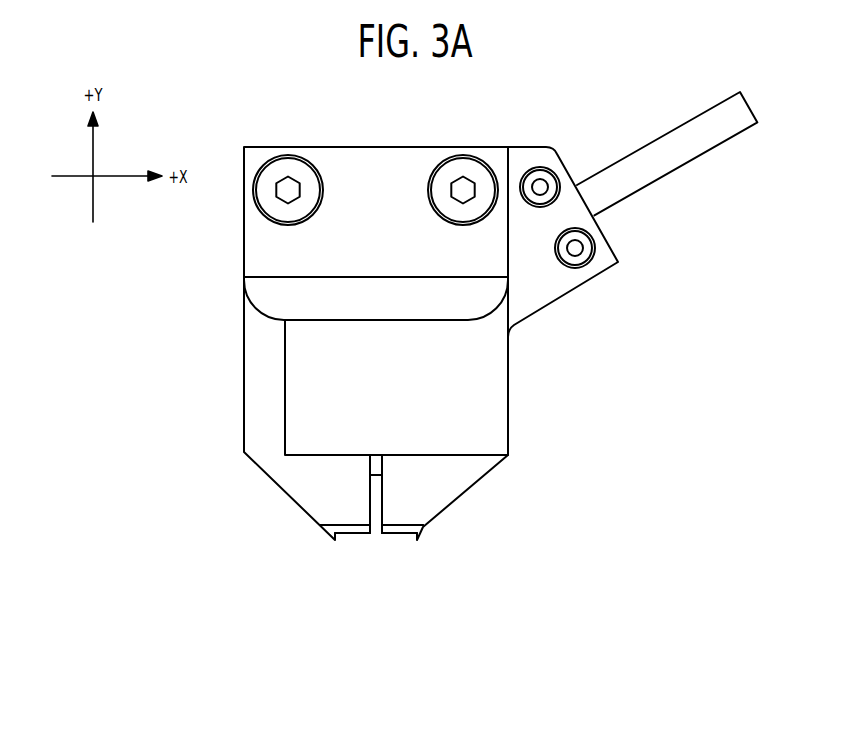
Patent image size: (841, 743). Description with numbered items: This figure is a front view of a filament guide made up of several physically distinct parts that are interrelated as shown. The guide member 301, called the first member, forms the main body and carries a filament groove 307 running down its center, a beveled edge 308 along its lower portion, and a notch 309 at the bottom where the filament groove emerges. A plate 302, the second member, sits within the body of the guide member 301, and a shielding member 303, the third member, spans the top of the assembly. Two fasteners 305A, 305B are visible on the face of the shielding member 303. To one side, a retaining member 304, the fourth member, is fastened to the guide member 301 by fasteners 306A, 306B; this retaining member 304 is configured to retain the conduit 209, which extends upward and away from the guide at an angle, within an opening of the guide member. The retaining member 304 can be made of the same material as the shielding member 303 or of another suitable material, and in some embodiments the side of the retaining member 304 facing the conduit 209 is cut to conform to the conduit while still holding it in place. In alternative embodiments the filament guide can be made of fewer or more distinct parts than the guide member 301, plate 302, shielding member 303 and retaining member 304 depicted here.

The conduit 209 is at (688, 118).
The guide member 301 is at (260, 403).
The plate 302 is at (497, 403).
The shielding member 303 is at (373, 163).
The retaining member 304 is at (550, 283).
The first fastener 305A is at (288, 163).
The second fastener 305B is at (462, 163).
The fastener 306A is at (547, 170).
The fastener 306B is at (589, 244).
The filament groove 307 is at (375, 465).
The beveled edge 308 is at (327, 532).
The notch 309 is at (378, 549).